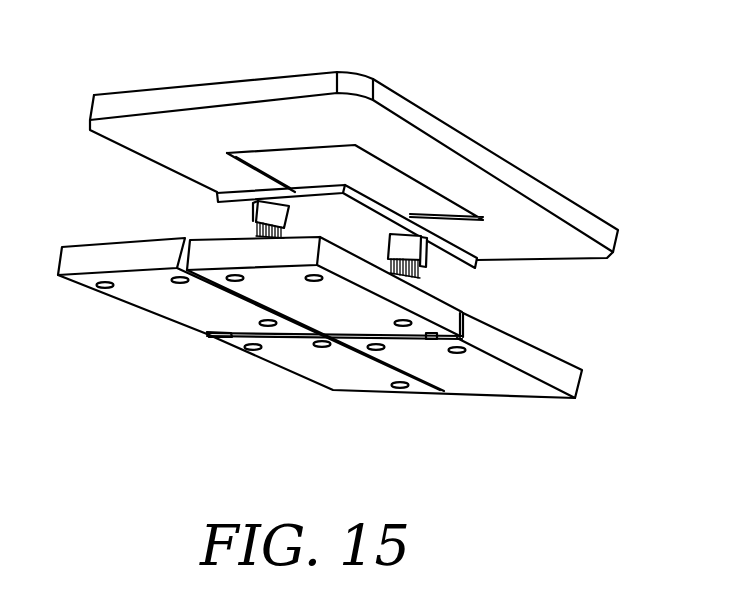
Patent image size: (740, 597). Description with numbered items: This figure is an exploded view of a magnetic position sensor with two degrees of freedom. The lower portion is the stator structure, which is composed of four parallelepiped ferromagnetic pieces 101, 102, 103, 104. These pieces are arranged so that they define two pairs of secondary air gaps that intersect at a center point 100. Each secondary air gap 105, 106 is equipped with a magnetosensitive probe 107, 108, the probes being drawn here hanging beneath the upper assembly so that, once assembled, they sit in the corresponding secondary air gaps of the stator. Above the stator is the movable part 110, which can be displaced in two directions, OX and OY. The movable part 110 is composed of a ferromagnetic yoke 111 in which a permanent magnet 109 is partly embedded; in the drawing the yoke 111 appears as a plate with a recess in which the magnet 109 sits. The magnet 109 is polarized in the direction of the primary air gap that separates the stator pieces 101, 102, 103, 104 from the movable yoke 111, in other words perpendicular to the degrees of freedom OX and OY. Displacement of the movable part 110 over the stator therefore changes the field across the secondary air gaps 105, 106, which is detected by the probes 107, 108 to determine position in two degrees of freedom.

The center point 100 is at (330, 335).
The parallelepiped ferromagnetic piece 101 is at (572, 380).
The parallelepiped ferromagnetic piece 102 is at (303, 358).
The parallelepiped ferromagnetic piece 103 is at (145, 295).
The parallelepiped ferromagnetic piece 104 is at (465, 313).
The secondary air gap 105 is at (433, 340).
The secondary air gap 106 is at (228, 338).
The magnetosensitive probe 107 is at (258, 217).
The magnetosensitive probe 108 is at (417, 252).
The permanent magnet 109 is at (373, 203).
The movable part 110 is at (525, 145).
The ferromagnetic yoke 111 is at (230, 103).